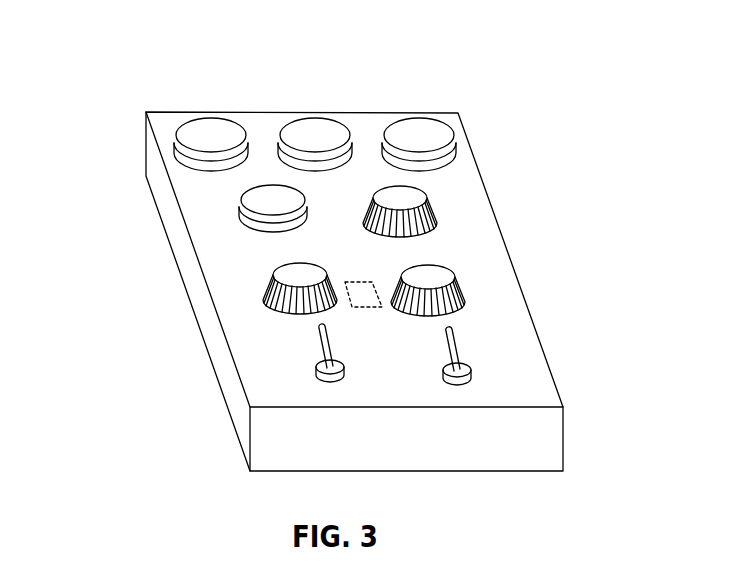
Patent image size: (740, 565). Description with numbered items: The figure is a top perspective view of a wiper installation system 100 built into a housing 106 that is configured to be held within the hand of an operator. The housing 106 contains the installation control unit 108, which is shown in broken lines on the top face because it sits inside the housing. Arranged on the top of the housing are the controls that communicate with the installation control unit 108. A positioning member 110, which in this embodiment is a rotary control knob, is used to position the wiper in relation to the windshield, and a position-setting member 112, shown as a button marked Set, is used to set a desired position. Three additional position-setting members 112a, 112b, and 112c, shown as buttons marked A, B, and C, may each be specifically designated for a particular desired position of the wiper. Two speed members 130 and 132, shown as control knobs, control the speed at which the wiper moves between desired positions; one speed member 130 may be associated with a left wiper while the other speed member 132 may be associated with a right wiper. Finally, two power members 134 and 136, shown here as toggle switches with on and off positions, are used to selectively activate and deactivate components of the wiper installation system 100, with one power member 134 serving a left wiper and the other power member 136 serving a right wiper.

The wiper installation system 100 is at (152, 79).
The housing 106 is at (566, 440).
The installation control unit 108 is at (375, 283).
The positioning member 110 is at (427, 190).
The position-setting member 112 is at (240, 200).
The position-setting member 112a is at (223, 123).
The position-setting member 112b is at (325, 120).
The position-setting member 112c is at (432, 122).
The speed member 130 is at (272, 281).
The speed member 132 is at (447, 268).
The power member 134 is at (322, 352).
The power member 136 is at (462, 333).